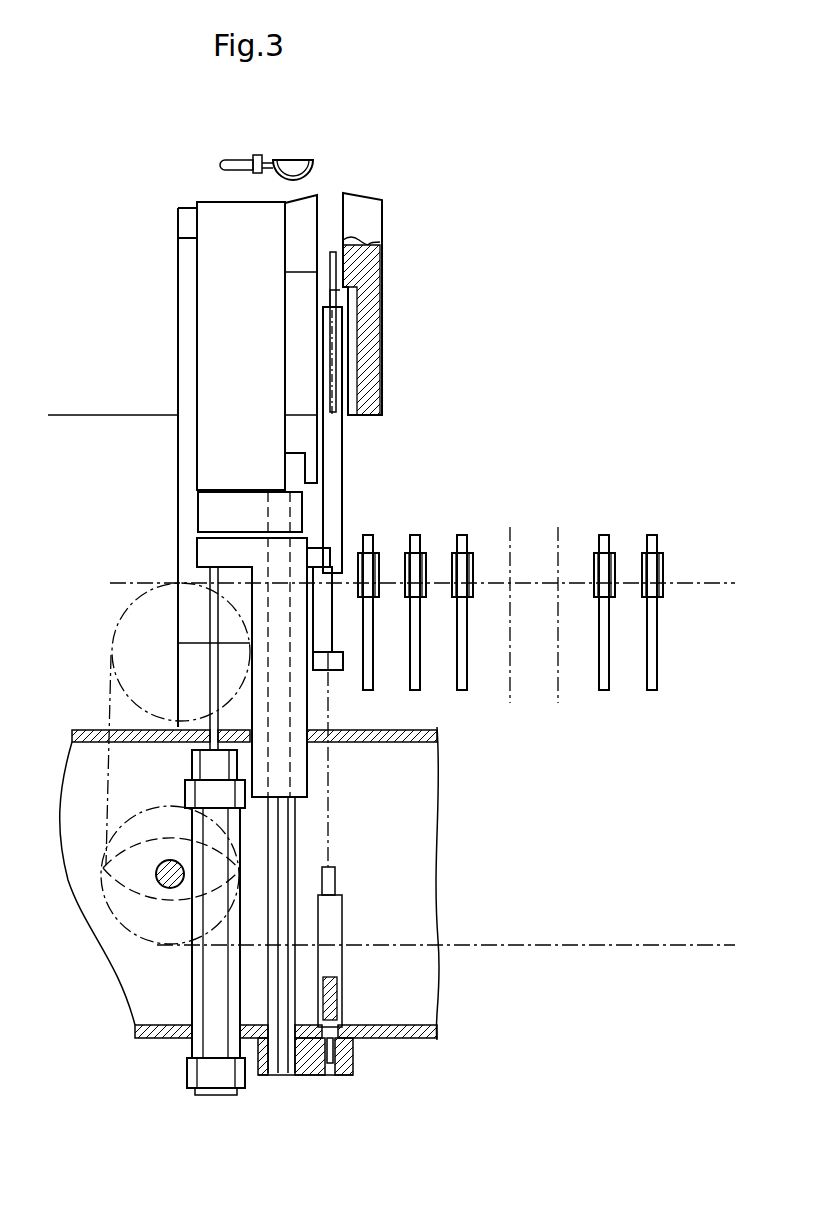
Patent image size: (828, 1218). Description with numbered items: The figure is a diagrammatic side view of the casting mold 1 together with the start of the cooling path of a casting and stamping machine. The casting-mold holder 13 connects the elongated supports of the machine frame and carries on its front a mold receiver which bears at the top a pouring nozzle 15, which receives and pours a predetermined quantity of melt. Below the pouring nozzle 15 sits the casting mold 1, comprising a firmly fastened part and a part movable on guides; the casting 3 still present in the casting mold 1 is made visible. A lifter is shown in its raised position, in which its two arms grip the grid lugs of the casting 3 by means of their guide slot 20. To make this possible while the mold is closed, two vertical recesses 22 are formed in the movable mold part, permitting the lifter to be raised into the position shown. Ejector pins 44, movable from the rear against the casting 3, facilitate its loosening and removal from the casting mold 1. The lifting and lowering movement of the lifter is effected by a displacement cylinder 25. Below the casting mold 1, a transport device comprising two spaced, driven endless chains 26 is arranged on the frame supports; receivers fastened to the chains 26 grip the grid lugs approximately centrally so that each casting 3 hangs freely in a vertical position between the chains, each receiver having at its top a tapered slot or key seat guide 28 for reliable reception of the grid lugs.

The casting mold 1 is at (360, 208).
The casting 3 is at (338, 270).
The casting-mold holder 13 is at (214, 222).
The pouring nozzle 15 is at (293, 163).
The guide slot 20 is at (326, 302).
The vertical recesses 22 is at (350, 377).
The displacement cylinder 25 is at (203, 990).
The driven endless chains 26 is at (566, 580).
The key seat guide 28 is at (427, 566).
The ejector pins 44 is at (303, 270).